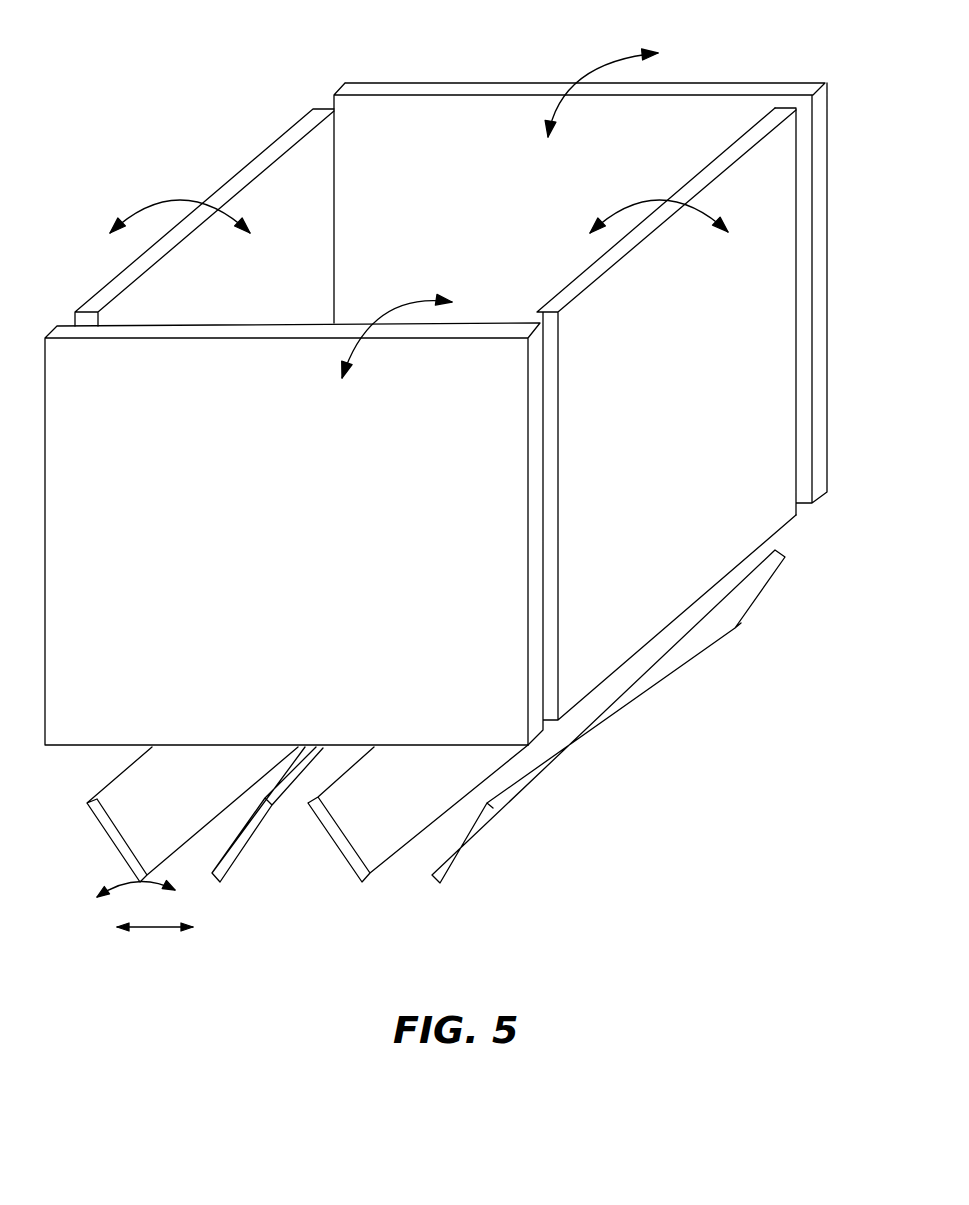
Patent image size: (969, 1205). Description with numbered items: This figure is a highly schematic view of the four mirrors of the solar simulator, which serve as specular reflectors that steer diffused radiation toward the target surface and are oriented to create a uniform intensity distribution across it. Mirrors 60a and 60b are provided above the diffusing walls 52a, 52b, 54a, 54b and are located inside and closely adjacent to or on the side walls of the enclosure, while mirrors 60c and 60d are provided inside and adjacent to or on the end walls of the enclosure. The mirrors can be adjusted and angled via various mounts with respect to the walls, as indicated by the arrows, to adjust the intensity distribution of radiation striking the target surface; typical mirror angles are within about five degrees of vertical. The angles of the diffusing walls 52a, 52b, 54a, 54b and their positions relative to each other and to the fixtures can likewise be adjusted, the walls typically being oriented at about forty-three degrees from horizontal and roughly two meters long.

The mirror 60a is at (250, 291).
The mirror 60b is at (663, 329).
The mirror 60c is at (229, 437).
The mirror 60d is at (483, 160).
The diffusing wall 52a is at (113, 833).
The diffusing wall 52b is at (262, 838).
The diffusing wall 54a is at (370, 838).
The diffusing wall 54b is at (497, 820).